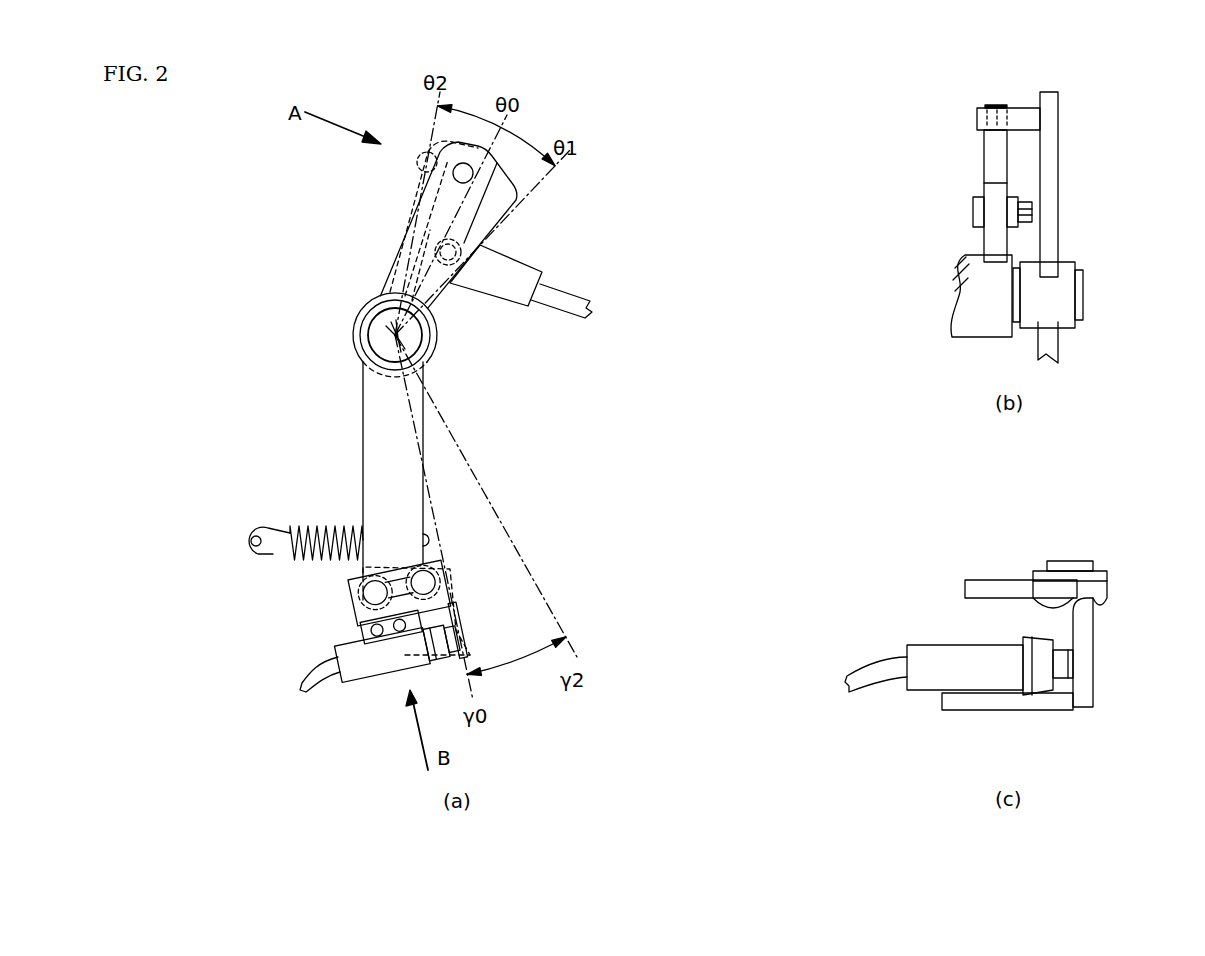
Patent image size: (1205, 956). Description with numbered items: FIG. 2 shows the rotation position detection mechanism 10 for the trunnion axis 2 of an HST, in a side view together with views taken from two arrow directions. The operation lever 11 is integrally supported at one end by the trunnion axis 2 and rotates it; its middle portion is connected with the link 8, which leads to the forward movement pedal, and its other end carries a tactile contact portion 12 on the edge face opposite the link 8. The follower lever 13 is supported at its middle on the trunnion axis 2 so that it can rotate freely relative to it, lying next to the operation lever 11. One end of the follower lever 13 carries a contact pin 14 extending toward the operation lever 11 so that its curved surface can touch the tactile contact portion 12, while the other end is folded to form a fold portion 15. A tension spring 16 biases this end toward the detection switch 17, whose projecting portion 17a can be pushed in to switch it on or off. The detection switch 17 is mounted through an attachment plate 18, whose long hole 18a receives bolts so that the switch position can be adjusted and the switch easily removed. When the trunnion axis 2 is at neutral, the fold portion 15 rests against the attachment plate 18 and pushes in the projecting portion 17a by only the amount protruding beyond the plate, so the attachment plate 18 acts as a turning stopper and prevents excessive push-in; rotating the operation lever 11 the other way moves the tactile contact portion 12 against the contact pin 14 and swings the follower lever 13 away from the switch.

The trunnion axis 2 is at (368, 335).
The link 8 is at (560, 298).
The rotation position detection mechanism 10 is at (654, 220).
The operation lever 11 is at (490, 230).
The tactile contact portion 12 is at (425, 175).
The follower lever 13 is at (368, 412).
The contact pin 14 is at (441, 160).
The fold portion 15 is at (470, 652).
The tension spring 16 is at (290, 520).
The detection switch 17 is at (363, 668).
The projecting portion 17a is at (462, 622).
The attachment plate 18 is at (355, 585).
The long hole 18a is at (440, 572).